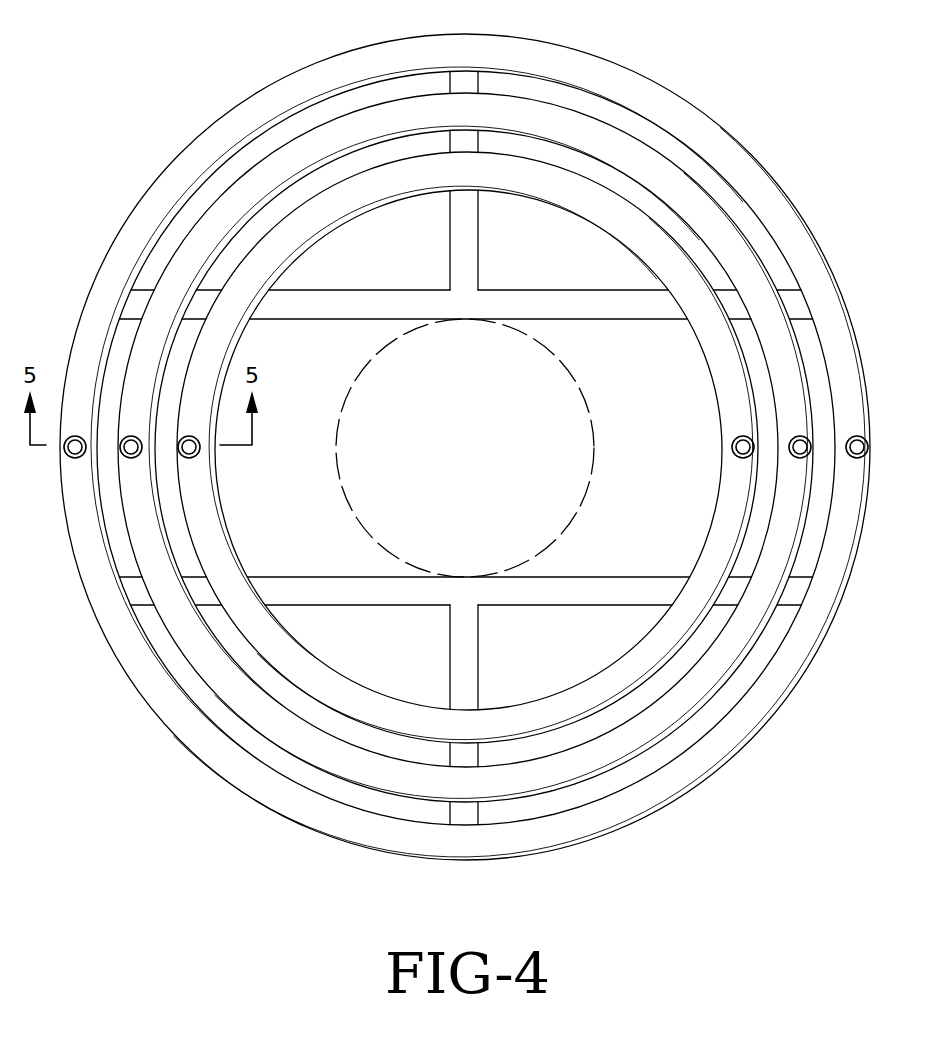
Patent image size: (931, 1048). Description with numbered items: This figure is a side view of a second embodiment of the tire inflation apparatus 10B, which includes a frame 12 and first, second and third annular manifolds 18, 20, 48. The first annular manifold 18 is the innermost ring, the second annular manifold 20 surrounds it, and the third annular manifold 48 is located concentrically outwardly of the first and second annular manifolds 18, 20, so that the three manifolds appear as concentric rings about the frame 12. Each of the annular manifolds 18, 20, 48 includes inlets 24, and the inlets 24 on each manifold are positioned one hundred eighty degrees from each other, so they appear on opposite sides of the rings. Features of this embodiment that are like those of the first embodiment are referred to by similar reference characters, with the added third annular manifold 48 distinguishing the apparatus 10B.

The tire inflation apparatus 10B is at (750, 118).
The third annular manifold 48 is at (199, 731).
The second annular manifold 20 is at (300, 740).
The first annular manifold 18 is at (327, 690).
The frame 12 is at (628, 590).
The inlets 24 is at (82, 456).